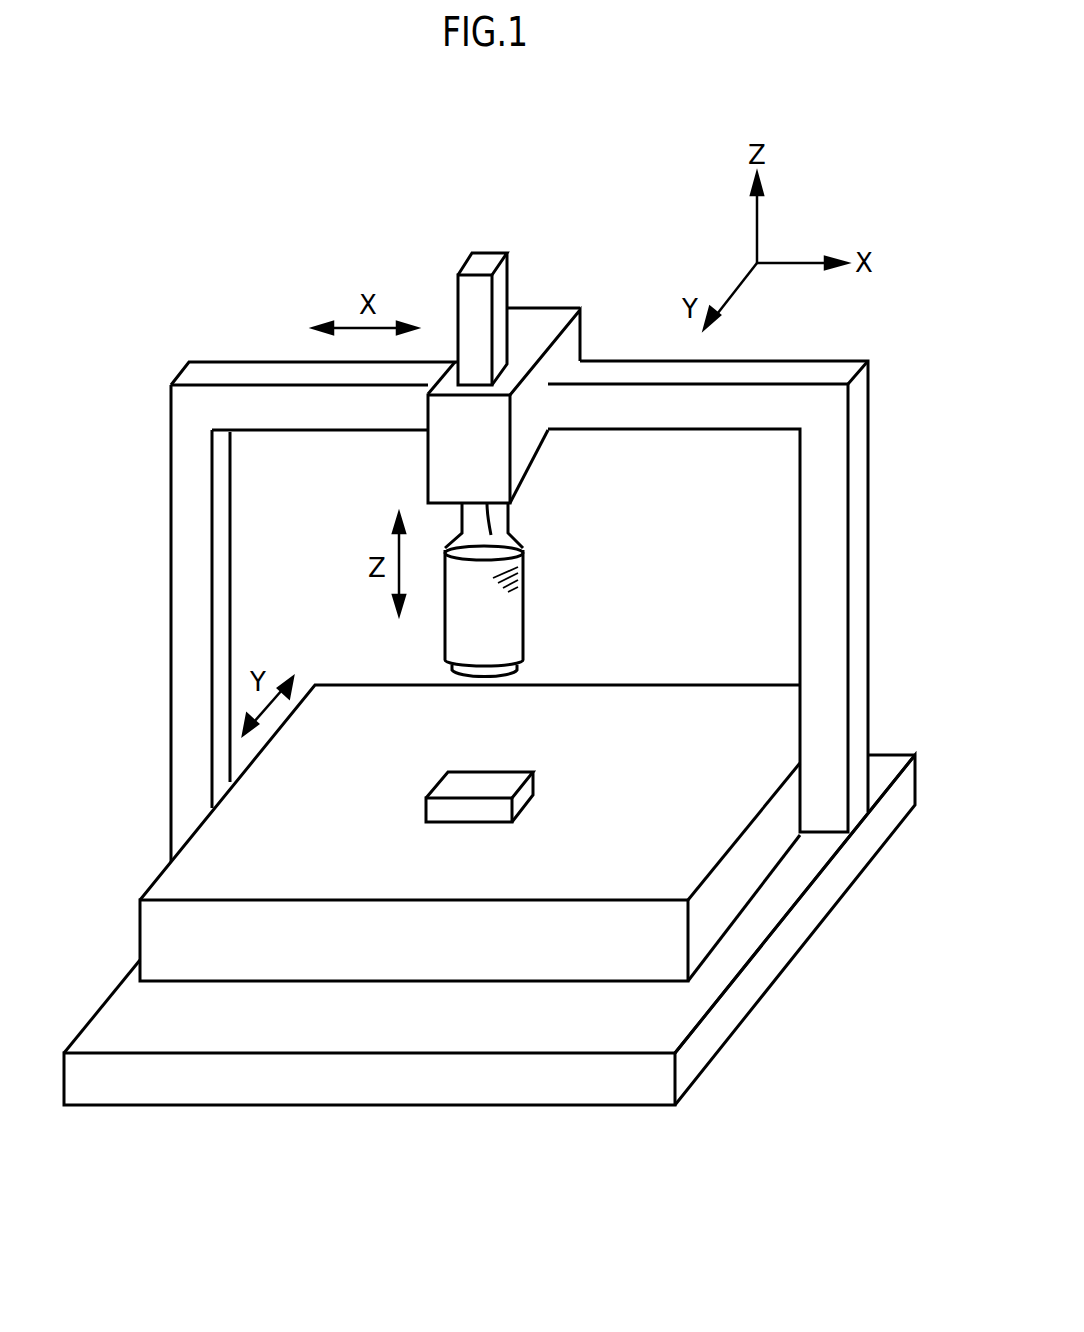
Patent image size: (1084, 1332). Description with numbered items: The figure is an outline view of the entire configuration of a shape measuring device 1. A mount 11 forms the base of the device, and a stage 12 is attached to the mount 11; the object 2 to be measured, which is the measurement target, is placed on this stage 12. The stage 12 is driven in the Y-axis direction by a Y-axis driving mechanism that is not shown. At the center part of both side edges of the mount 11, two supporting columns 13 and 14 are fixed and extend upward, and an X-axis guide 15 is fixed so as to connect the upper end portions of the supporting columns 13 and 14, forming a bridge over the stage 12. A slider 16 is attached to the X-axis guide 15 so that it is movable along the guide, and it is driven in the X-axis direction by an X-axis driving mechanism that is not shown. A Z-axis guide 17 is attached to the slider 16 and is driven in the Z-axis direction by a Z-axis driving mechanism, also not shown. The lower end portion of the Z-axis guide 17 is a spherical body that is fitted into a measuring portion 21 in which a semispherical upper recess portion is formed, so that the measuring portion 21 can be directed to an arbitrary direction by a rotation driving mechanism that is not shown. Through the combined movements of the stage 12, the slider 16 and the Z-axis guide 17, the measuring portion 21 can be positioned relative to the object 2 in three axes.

The shape measuring device 1 is at (357, 1162).
The object to be measured 2 is at (535, 797).
The mount 11 is at (595, 1020).
The stage 12 is at (308, 962).
The supporting column 13 is at (171, 682).
The supporting column 14 is at (800, 640).
The X-axis guide 15 is at (240, 370).
The slider 16 is at (563, 313).
The Z-axis guide 17 is at (483, 258).
The measuring portion 21 is at (510, 632).